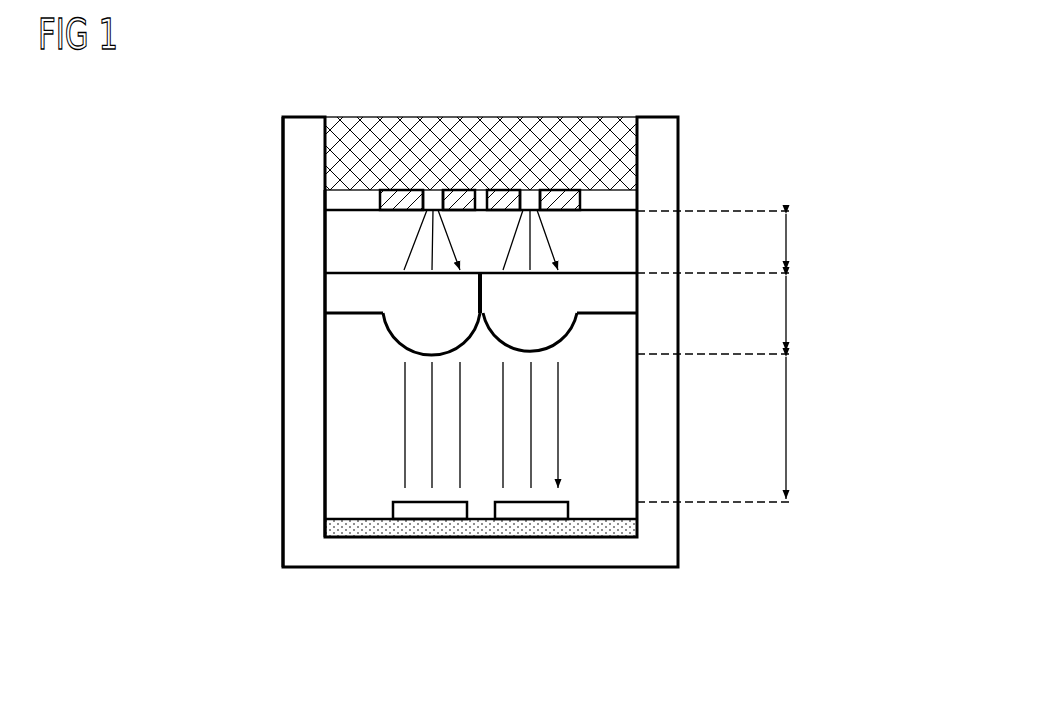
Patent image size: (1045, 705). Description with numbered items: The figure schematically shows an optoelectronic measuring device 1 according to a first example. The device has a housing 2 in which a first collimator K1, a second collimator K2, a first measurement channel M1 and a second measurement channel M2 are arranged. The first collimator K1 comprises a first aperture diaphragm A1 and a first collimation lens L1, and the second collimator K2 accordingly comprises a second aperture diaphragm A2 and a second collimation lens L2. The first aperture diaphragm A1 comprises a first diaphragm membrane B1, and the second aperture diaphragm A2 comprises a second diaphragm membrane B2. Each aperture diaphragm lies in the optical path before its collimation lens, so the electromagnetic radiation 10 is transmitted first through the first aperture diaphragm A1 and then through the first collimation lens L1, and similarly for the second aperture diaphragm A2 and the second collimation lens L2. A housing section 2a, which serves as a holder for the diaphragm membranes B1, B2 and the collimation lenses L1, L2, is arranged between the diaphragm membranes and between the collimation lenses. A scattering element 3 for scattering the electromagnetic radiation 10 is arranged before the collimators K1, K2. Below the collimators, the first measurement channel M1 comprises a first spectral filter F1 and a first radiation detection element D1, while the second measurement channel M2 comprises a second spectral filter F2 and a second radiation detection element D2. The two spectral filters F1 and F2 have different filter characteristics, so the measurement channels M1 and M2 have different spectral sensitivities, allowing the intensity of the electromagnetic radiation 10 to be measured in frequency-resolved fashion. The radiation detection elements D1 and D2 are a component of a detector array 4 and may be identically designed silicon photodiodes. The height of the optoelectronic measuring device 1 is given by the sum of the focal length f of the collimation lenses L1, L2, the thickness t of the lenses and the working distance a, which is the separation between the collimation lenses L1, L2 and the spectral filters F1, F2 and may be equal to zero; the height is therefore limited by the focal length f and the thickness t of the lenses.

The optoelectronic measuring device 1 is at (737, 77).
The housing 2 is at (295, 285).
The housing section 2a is at (383, 314).
The scattering element 3 is at (357, 132).
The detector array 4 is at (637, 530).
The electromagnetic radiation 10 is at (380, 237).
The first aperture diaphragm A1 is at (429, 180).
The second aperture diaphragm A2 is at (533, 180).
The first diaphragm membrane B1 is at (455, 190).
The second diaphragm membrane B2 is at (503, 190).
The first collimator K1 is at (424, 100).
The second collimator K2 is at (538, 100).
The first collimation lens L1 is at (400, 343).
The second collimation lens L2 is at (570, 340).
The first spectral filter F1 is at (393, 507).
The second spectral filter F2 is at (573, 507).
The first radiation detection element D1 is at (417, 543).
The second radiation detection element D2 is at (547, 543).
The first measurement channel M1 is at (425, 582).
The second measurement channel M2 is at (537, 582).
The focal length f is at (786, 240).
The thickness t is at (786, 315).
The working distance a is at (786, 429).